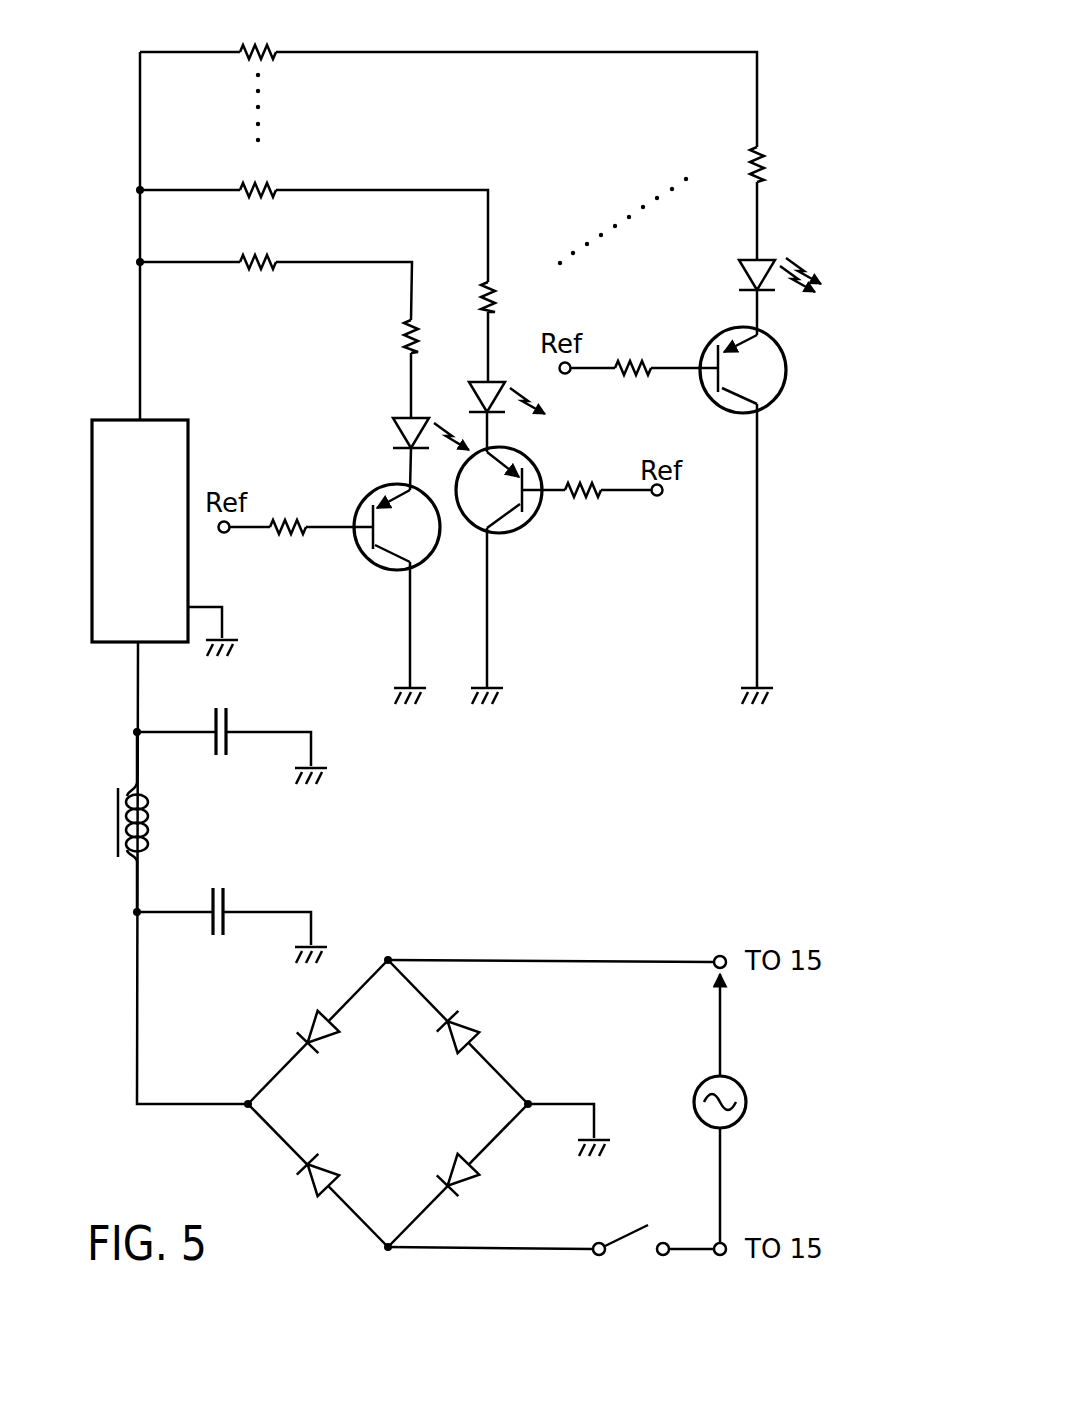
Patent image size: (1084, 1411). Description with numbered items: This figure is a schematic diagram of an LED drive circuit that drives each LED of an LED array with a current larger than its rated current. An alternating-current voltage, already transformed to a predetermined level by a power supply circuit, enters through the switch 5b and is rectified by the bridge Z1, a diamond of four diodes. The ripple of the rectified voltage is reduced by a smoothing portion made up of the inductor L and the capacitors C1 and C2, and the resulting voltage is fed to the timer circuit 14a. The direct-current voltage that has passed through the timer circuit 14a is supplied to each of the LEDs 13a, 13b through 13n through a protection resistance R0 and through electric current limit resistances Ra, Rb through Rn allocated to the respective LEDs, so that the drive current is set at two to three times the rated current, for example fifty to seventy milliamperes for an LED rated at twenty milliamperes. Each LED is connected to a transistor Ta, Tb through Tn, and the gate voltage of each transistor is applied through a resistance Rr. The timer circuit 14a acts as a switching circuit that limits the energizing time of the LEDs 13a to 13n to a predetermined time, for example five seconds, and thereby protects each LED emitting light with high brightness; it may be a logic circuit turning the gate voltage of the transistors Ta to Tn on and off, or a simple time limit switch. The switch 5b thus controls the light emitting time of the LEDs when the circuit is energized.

The protection resistance R0 is at (260, 140).
The electric current limit resistance Rn is at (745, 162).
The electric current limit resistance Ra is at (404, 336).
The electric current limit resistance Rb is at (498, 300).
The resistance Rr is at (636, 356).
The LED 13n is at (763, 258).
The LED 13a is at (390, 433).
The LED 13b is at (476, 380).
The transistor Tn is at (783, 390).
The transistor Ta is at (423, 560).
The transistor Tb is at (498, 536).
The timer circuit 14a is at (114, 420).
The capacitor C1 is at (226, 887).
The capacitor C2 is at (228, 758).
The inductor L is at (119, 822).
The bridge Z1 is at (368, 990).
The switch 5b is at (632, 1256).